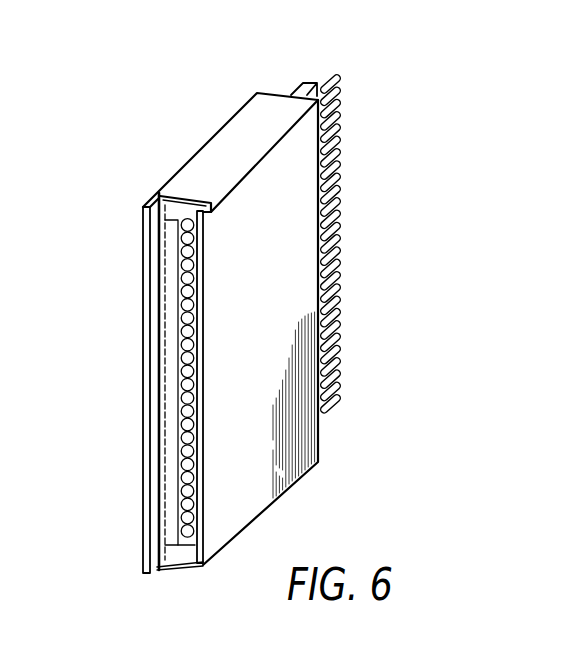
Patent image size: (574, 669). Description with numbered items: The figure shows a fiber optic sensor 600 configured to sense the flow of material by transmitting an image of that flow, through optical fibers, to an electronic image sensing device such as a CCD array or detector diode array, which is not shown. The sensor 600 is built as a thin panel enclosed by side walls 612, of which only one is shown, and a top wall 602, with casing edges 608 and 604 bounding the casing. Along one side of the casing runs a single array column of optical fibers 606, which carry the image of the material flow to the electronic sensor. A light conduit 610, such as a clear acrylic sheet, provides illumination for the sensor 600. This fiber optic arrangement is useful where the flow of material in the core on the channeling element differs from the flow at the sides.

The fiber optic sensor 600 is at (216, 319).
The top wall 602 is at (252, 131).
The casing edge 604 is at (158, 194).
The optical fibers 606 is at (320, 394).
The casing edge 608 is at (140, 543).
The light conduit 610 is at (303, 86).
The side wall 612 is at (278, 293).